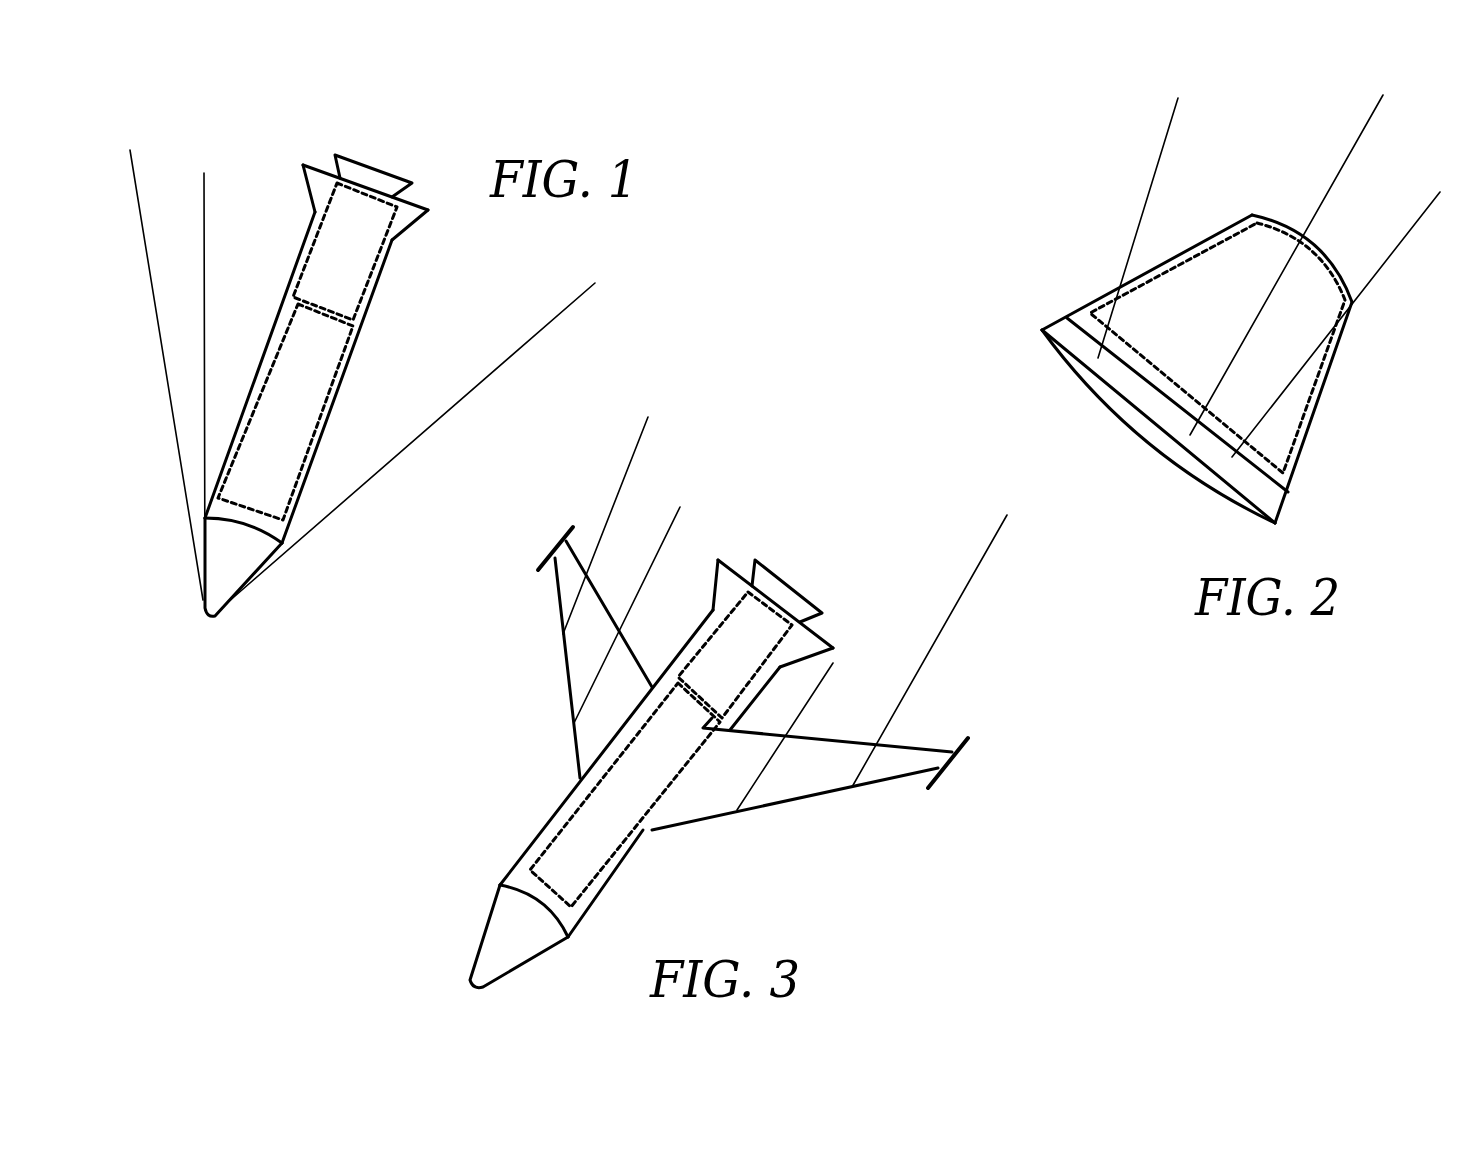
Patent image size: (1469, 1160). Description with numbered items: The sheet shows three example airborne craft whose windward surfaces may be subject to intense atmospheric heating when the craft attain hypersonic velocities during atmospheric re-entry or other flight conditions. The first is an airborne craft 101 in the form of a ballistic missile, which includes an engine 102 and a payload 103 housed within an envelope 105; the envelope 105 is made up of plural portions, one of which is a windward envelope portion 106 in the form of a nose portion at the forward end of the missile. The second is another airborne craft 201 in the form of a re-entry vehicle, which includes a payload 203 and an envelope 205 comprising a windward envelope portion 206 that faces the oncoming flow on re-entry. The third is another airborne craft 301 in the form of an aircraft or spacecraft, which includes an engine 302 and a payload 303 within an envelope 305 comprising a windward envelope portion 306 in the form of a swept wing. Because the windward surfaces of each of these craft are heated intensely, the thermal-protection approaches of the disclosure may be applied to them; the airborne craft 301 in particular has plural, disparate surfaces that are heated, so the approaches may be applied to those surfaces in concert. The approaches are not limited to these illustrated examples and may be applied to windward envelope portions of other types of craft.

In FIG. 1, the airborne craft 101 is at (386, 365).
In FIG. 1, the engine 102 is at (365, 262).
In FIG. 1, the payload 103 is at (308, 416).
In FIG. 1, the envelope 105 is at (377, 290).
In FIG. 1, the windward envelope portion 106 is at (220, 605).
In FIG. 2, the airborne craft 201 is at (1088, 237).
In FIG. 2, the payload 203 is at (1220, 324).
In FIG. 2, the envelope 205 is at (1305, 438).
In FIG. 2, the windward envelope portion 206 is at (1180, 447).
In FIG. 3, the airborne craft 301 is at (540, 775).
In FIG. 3, the engine 302 is at (757, 666).
In FIG. 3, the payload 303 is at (645, 807).
In FIG. 3, the envelope 305 is at (917, 748).
In FIG. 3, the windward envelope portion 306 is at (770, 808).